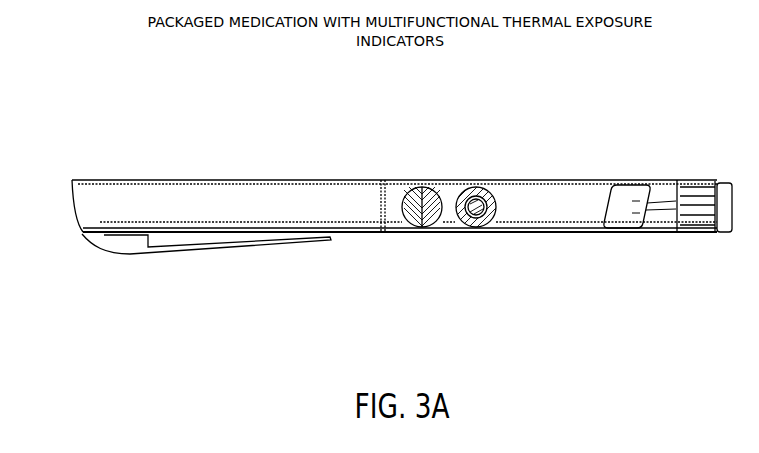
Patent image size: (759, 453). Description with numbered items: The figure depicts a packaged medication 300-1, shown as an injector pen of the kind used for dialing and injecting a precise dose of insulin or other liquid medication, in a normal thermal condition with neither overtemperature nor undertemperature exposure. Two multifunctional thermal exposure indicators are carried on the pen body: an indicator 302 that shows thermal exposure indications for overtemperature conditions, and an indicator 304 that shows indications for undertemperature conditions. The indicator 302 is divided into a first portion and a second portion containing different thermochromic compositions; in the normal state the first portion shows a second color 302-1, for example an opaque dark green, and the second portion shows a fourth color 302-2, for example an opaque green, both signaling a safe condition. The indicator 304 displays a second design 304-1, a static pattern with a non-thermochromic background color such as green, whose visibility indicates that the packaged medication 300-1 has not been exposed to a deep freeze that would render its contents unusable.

The packaged medication 300-1 is at (107, 29).
The multifunctional thermal exposure indicator 302 is at (419, 189).
The second color 302-1 is at (413, 217).
The fourth color 302-2 is at (431, 216).
The multifunctional thermal exposure indicator 304 is at (477, 189).
The second design 304-1 is at (482, 217).